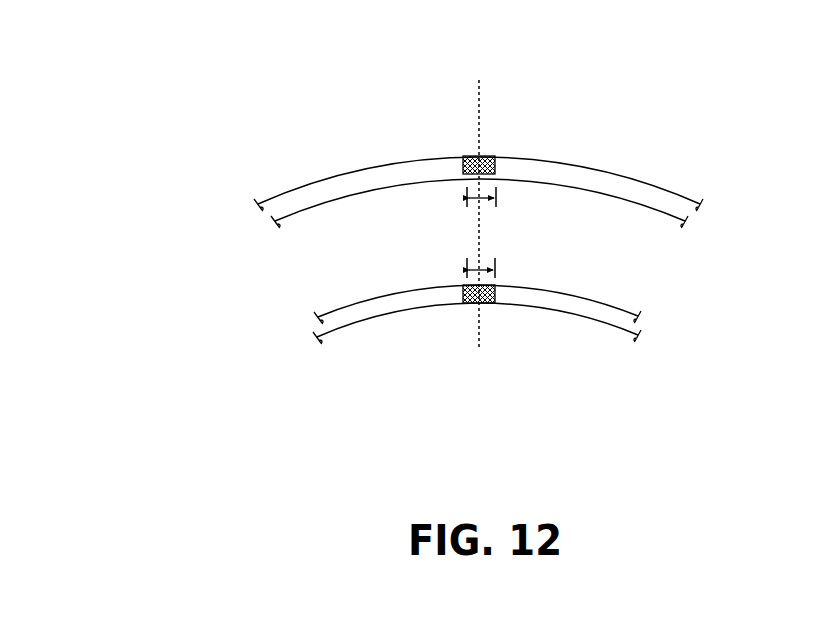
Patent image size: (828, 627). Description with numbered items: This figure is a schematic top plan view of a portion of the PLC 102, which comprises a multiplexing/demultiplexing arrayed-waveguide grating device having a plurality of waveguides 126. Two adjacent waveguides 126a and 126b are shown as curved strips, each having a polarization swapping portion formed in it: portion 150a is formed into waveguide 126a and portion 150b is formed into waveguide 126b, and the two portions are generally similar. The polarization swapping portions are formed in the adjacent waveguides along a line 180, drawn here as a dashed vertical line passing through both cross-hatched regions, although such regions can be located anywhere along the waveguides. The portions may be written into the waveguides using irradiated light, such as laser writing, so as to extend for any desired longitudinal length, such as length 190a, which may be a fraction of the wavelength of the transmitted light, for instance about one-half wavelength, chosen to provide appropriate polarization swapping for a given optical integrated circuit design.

The PLC 102 is at (147, 153).
The waveguides 126 is at (656, 152).
The waveguide 126a is at (413, 155).
The waveguide 126b is at (397, 287).
The polarization swapping portion 150a is at (486, 145).
The polarization swapping portion 150b is at (493, 318).
The line 180 is at (479, 113).
The length 190a is at (478, 205).